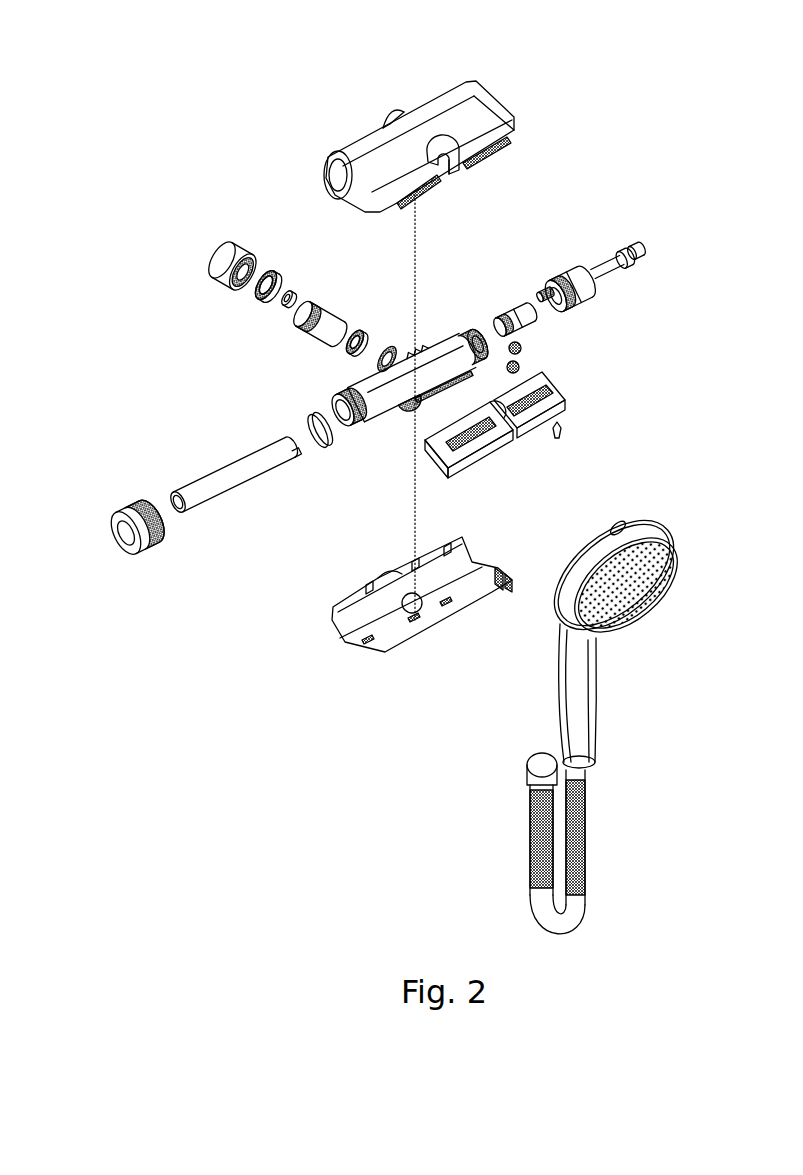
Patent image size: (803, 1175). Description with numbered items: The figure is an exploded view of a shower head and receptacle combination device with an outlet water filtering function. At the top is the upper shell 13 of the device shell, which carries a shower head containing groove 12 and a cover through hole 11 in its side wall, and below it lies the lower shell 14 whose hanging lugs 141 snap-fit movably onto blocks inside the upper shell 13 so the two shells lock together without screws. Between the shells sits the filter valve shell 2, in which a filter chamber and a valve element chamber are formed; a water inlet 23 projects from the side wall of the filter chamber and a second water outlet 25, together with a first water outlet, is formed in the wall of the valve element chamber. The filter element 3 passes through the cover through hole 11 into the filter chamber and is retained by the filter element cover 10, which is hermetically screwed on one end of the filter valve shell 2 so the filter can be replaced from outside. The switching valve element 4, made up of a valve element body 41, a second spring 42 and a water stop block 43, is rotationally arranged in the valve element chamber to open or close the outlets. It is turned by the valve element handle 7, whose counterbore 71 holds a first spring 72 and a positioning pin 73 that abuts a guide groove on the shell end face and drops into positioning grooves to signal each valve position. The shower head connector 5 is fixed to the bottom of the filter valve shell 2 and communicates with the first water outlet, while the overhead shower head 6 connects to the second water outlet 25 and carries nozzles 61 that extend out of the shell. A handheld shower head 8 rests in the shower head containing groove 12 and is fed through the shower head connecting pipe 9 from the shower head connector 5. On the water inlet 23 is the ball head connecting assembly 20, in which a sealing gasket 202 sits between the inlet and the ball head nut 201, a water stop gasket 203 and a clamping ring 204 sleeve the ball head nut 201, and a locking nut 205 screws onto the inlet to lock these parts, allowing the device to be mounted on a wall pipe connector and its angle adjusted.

The filter valve shell 2 is at (431, 352).
The filter element 3 is at (218, 500).
The switching valve element 4 is at (594, 334).
The shower head connector 5 is at (487, 463).
The overhead shower head 6 is at (560, 410).
The valve element handle 7 is at (604, 236).
The handheld shower head 8 is at (590, 683).
The shower head connecting pipe 9 is at (585, 862).
The filter element cover 10 is at (118, 540).
The cover through hole 11 is at (332, 152).
The shower head containing groove 12 is at (460, 110).
The upper shell 13 is at (397, 108).
The lower shell 14 is at (435, 652).
The ball head connecting assembly 20 is at (239, 336).
The water inlet 23 is at (385, 345).
The second water outlet 25 is at (478, 345).
The valve element body 41 is at (540, 318).
The second spring 42 is at (522, 348).
The water stop block 43 is at (520, 368).
The nozzles 61 is at (561, 434).
The counterbore 71 is at (596, 270).
The first spring 72 is at (570, 284).
The positioning pin 73 is at (543, 290).
The hanging lugs 141 is at (499, 610).
The ball head nut 201 is at (303, 320).
The sealing gasket 202 is at (310, 373).
The water stop gasket 203 is at (282, 303).
The clamping ring 204 is at (255, 292).
The locking nut 205 is at (214, 262).